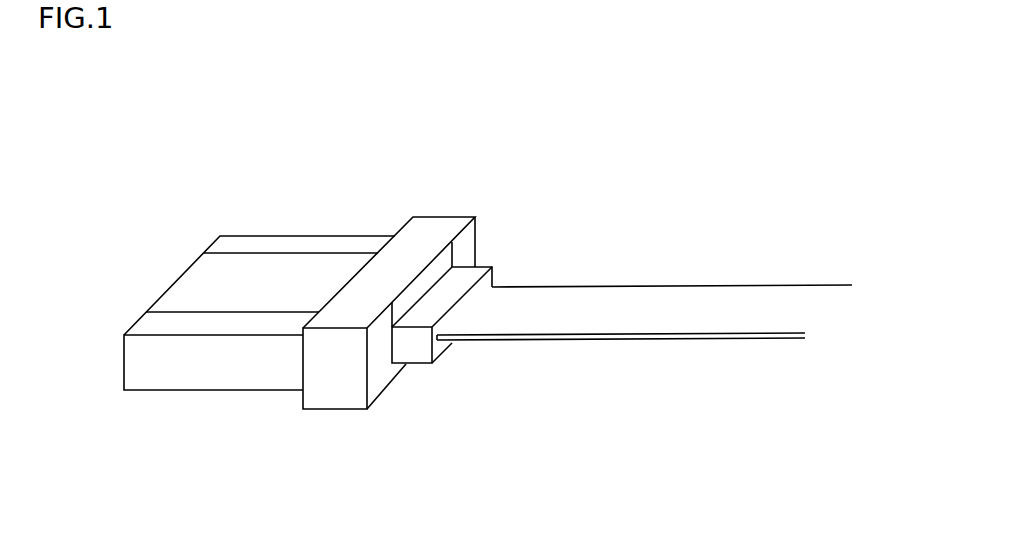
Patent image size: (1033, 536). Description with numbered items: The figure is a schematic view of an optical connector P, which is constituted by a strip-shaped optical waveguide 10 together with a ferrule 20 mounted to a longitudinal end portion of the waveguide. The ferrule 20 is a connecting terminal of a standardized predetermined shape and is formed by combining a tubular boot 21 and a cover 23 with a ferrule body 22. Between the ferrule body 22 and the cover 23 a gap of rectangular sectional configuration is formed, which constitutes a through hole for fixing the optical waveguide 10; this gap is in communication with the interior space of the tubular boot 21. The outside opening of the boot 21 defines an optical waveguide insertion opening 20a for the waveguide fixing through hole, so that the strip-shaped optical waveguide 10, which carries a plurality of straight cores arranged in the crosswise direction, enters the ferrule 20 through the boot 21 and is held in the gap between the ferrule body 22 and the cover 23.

The strip-shaped optical waveguide 10 is at (648, 310).
The ferrule 20 is at (327, 227).
The optical waveguide insertion opening 20a is at (448, 320).
The tubular boot 21 is at (455, 283).
The ferrule body 22 is at (212, 360).
The cover 23 is at (250, 282).
The optical connector P is at (518, 378).